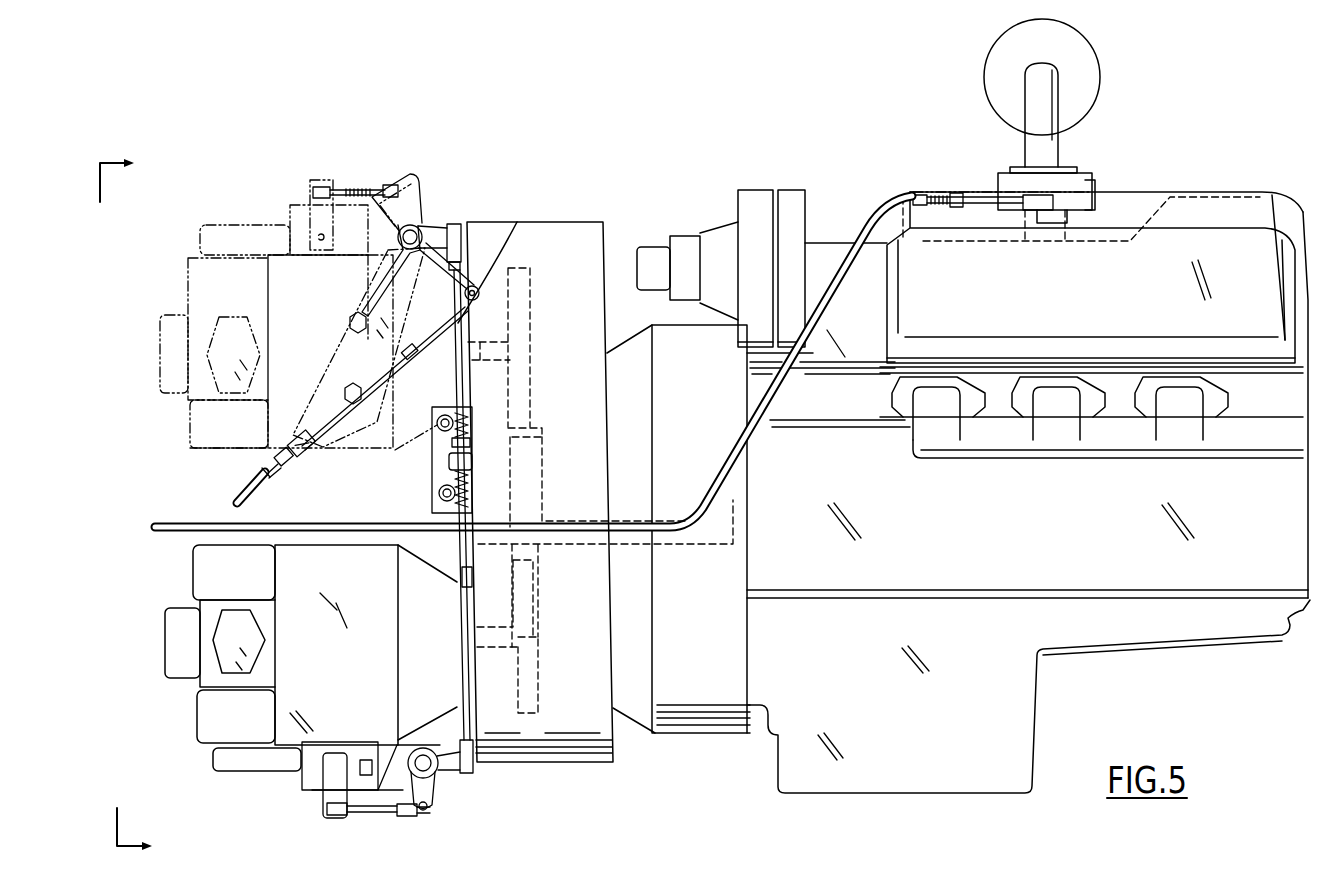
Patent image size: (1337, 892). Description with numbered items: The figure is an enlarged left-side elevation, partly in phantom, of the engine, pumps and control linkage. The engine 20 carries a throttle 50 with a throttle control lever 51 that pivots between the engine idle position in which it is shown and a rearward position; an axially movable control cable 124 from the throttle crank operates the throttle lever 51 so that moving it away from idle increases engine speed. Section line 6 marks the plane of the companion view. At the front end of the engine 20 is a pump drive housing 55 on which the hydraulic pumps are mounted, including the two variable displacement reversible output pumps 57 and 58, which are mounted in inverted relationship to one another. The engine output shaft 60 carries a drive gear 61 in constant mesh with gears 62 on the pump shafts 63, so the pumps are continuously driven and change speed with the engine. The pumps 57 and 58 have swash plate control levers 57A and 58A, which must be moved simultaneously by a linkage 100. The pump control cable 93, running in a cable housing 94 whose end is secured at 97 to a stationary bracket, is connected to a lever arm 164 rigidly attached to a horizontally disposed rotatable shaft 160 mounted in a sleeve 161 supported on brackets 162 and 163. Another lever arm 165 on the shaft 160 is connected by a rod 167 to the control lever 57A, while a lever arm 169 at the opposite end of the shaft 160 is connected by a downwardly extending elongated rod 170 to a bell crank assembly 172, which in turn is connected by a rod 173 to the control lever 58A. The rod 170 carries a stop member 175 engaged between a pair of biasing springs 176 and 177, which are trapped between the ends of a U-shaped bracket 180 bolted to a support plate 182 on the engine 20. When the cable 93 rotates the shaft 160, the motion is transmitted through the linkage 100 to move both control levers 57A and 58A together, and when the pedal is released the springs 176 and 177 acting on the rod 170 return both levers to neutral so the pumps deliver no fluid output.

The section line 6- 6 is at (132, 503).
The engine 20 is at (1213, 203).
The throttle 50 is at (1070, 187).
The throttle control lever 51 is at (1052, 208).
The pump drive housing 55 is at (553, 230).
The hydraulic pump 57 is at (320, 298).
The swash plate control lever 57A is at (314, 182).
The hydraulic pump 58 is at (357, 588).
The swash plate control lever 58A is at (320, 802).
The output shaft 60 is at (689, 545).
The drive gear 61 is at (543, 470).
The gears 62 is at (533, 390).
The pump shafts 63 is at (488, 362).
The pump control cable 93 is at (437, 334).
The cable housing 94 is at (258, 479).
The cable housing securing point 97 is at (303, 467).
The linkage 100 is at (456, 193).
The throttle control cable 124 is at (187, 543).
The rotatable shaft 160 is at (401, 230).
The sleeve 161 is at (398, 240).
The bracket 162 is at (313, 461).
The bracket 163 is at (398, 303).
The lever arm 164 is at (471, 284).
The lever arm 165 is at (421, 204).
The rod 167 is at (360, 188).
The lever arm 169 is at (445, 223).
The elongated rod 170 is at (456, 545).
The bell crank assembly 172 is at (447, 777).
The rod 173 is at (387, 814).
The stop member 175 is at (468, 461).
The biasing spring 176 is at (450, 445).
The biasing spring 177 is at (449, 473).
The U-shaped bracket 180 is at (437, 493).
The support plate 182 is at (473, 414).